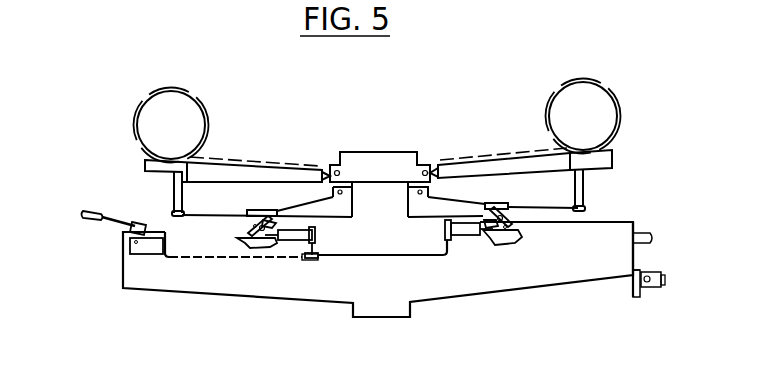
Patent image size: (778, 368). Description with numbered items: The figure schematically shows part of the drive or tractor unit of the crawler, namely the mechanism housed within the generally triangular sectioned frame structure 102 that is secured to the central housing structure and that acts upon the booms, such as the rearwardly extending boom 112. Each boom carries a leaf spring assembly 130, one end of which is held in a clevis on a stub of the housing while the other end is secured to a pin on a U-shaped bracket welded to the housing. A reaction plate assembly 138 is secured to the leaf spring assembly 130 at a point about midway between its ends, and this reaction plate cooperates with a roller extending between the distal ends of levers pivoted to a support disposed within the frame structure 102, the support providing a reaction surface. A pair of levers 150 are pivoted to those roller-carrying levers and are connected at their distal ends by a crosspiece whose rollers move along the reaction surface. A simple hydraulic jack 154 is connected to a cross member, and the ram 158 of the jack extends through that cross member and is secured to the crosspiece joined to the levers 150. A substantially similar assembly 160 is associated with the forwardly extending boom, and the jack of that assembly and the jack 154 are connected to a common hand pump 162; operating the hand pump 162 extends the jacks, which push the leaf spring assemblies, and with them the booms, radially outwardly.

The frame structure 102 is at (195, 280).
The boom 112 is at (380, 260).
The leaf spring assembly 130 is at (227, 205).
The reaction plate assembly 138 is at (259, 210).
The levers 150 is at (265, 248).
The hydraulic jack 154 is at (613, 319).
The ram 158 is at (504, 294).
The assembly 160 is at (513, 228).
The hand pump 162 is at (148, 244).